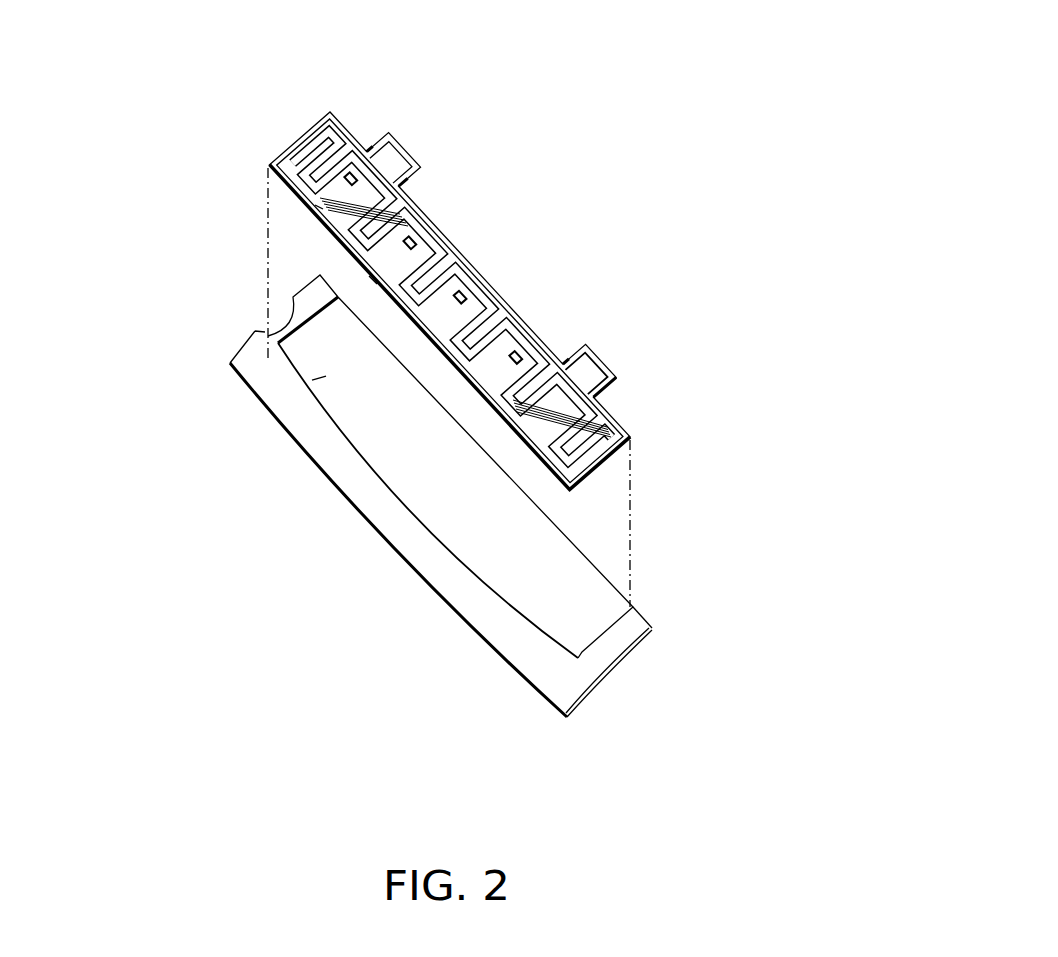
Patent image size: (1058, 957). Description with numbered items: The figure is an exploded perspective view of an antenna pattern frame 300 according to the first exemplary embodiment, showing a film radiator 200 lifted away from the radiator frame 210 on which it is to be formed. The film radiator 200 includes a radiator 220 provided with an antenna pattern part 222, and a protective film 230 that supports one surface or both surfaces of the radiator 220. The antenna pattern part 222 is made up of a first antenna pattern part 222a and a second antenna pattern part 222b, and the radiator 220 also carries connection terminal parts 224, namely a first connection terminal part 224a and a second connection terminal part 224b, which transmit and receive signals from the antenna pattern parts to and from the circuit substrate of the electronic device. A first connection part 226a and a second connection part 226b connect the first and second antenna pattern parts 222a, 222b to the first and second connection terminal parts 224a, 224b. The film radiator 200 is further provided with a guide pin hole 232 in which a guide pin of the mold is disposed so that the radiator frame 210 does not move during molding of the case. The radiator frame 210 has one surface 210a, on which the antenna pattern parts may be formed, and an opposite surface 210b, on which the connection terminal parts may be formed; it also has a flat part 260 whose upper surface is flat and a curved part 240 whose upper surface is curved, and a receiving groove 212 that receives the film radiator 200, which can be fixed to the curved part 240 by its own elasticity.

The antenna pattern frame 300 is at (729, 27).
The film radiator 200 is at (266, 154).
The radiator frame 210 is at (788, 687).
The one surface of the radiator frame 210a is at (293, 297).
The opposite surface of the radiator frame 210b is at (285, 338).
The receiving groove 212 is at (318, 378).
The radiator 220 is at (605, 406).
The antenna pattern part 222 is at (113, 208).
The first antenna pattern part 222a is at (373, 279).
The second antenna pattern part 222b is at (319, 207).
The connection terminal parts 224 is at (584, 109).
The first connection terminal part 224a is at (590, 347).
The second connection terminal part 224b is at (406, 166).
The first connection part 226a is at (615, 372).
The second connection part 226b is at (386, 140).
The protective film 230 is at (592, 461).
The guide pin hole 232 is at (349, 174).
The curved part 240 is at (565, 697).
The flat part 260 is at (623, 635).